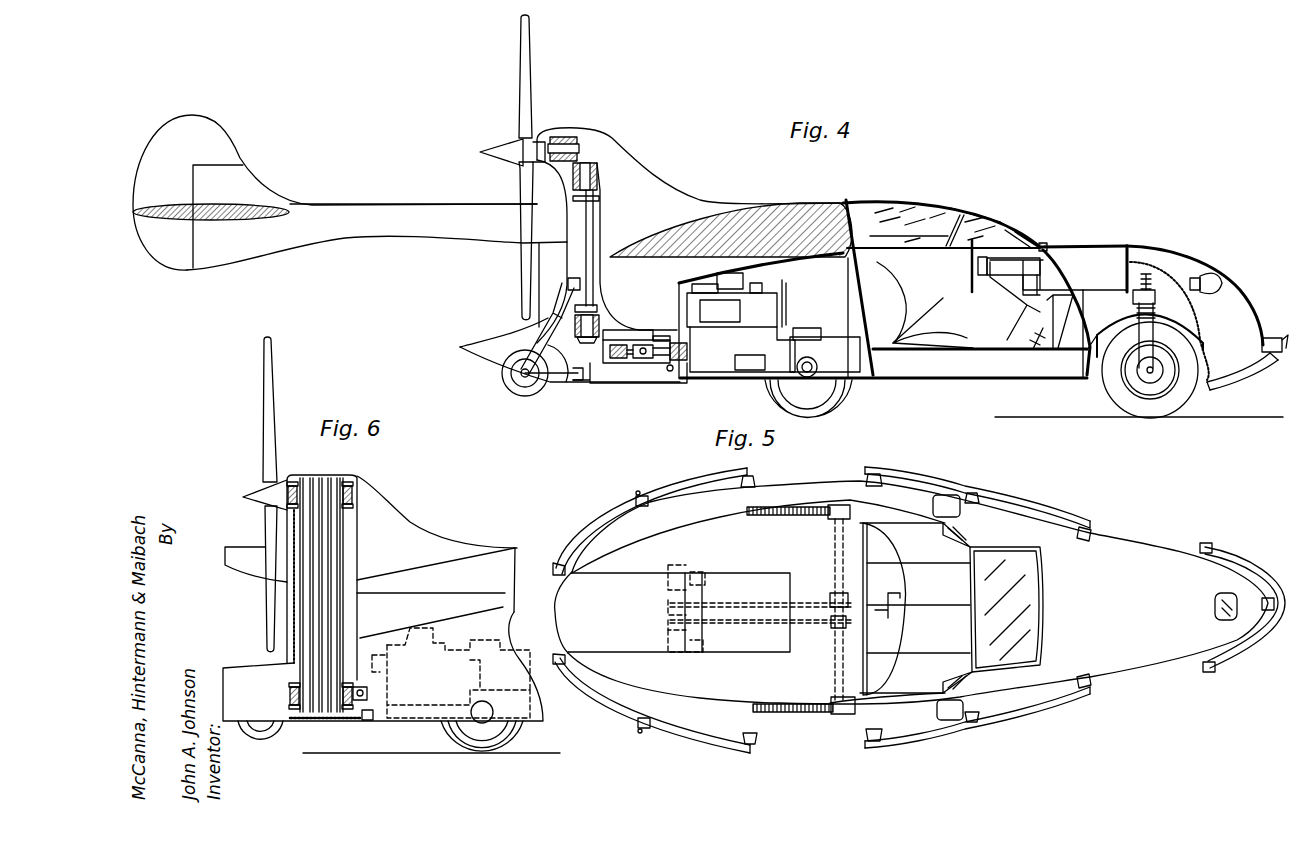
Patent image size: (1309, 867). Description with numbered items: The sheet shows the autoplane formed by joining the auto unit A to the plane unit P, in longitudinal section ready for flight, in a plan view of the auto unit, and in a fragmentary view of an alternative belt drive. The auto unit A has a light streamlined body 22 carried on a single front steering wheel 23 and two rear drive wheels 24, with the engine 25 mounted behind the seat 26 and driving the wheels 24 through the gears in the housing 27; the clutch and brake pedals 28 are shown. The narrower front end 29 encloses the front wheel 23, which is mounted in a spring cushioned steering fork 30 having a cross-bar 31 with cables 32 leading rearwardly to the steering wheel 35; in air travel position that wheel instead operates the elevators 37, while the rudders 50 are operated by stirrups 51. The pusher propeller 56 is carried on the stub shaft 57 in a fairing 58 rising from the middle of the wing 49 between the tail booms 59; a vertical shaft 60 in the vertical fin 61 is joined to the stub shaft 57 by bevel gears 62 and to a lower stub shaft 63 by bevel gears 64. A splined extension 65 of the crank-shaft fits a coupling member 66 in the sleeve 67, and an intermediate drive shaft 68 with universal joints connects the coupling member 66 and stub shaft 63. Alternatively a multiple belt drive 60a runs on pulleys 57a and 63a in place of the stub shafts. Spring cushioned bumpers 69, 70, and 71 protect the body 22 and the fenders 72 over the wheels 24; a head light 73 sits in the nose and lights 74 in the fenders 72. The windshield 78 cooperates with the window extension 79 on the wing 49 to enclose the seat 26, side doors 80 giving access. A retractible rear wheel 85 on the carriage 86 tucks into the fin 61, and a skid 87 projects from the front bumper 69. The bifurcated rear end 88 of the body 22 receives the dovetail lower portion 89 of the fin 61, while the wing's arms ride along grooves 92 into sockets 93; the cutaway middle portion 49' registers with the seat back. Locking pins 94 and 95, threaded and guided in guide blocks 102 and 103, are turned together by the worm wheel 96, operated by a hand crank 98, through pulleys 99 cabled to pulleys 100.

In FIG. 4, the body 22 is at (975, 380).
In FIG. 6, the body 22 is at (498, 627).
In FIG. 5, the body 22 is at (911, 592).
In FIG. 4, the front steering wheel 23 is at (1192, 394).
In FIG. 4, the rear drive wheels 24 is at (848, 398).
In FIG. 6, the rear drive wheels 24 is at (515, 738).
In FIG. 4, the engine 25 is at (741, 322).
In FIG. 6, the engine 25 is at (418, 708).
In FIG. 4, the seat 26 is at (935, 318).
In FIG. 5, the seat 26 is at (882, 695).
In FIG. 4, the housing 27 is at (860, 360).
In FIG. 4, the clutch and brake pedals 28 is at (1036, 350).
In FIG. 4, the front end 29 is at (1168, 258).
In FIG. 5, the front end 29 is at (1152, 548).
In FIG. 4, the steering fork 30 is at (1128, 330).
In FIG. 4, the cross-bar 31 is at (1156, 298).
In FIG. 4, the cables 32 is at (1090, 292).
In FIG. 4, the steering wheel 35 is at (970, 262).
In FIG. 4, the elevators 37 is at (158, 216).
In FIG. 4, the wing 49 is at (731, 216).
In FIG. 6, the wing 49 is at (436, 565).
In FIG. 4, the cutaway middle portion 49' is at (860, 192).
In FIG. 4, the rudders 50 is at (165, 130).
In FIG. 4, the stirrups 51 is at (1057, 333).
In FIG. 4, the propeller 56 is at (530, 70).
In FIG. 6, the propeller 56 is at (272, 405).
In FIG. 4, the stub shaft 57 is at (566, 140).
In FIG. 6, the pulley 57a is at (355, 492).
In FIG. 4, the fairing 58 is at (635, 155).
In FIG. 6, the fairing 58 is at (405, 515).
In FIG. 4, the tail booms 59 is at (444, 238).
In FIG. 6, the tail booms 59 is at (243, 565).
In FIG. 4, the vertical shaft 60 is at (594, 222).
In FIG. 6, the multiple belt drive 60a is at (325, 558).
In FIG. 4, the vertical fin 61 is at (562, 262).
In FIG. 6, the vertical fin 61 is at (294, 615).
In FIG. 4, the bevel gears 62 is at (595, 164).
In FIG. 4, the stub shaft 63 is at (619, 365).
In FIG. 6, the pulley 63a is at (316, 709).
In FIG. 4, the bevel gears 64 is at (598, 346).
In FIG. 4, the splined extension 65 is at (683, 362).
In FIG. 4, the coupling member 66 is at (661, 336).
In FIG. 6, the coupling member 66 is at (362, 686).
In FIG. 4, the sleeve 67 is at (618, 340).
In FIG. 4, the intermediate drive shaft 68 is at (647, 365).
In FIG. 4, the front bumper 69 is at (1277, 355).
In FIG. 5, the front bumper 69 is at (1250, 560).
In FIG. 5, the middle bumper 70 is at (1030, 503).
In FIG. 5, the rear bumper 71 is at (650, 485).
In FIG. 5, the fenders 72 is at (808, 487).
In FIG. 4, the head light 73 is at (1226, 280).
In FIG. 5, the head light 73 is at (1214, 607).
In FIG. 5, the lights 74 is at (933, 506).
In FIG. 4, the windshield 78 is at (1036, 244).
In FIG. 5, the windshield 78 is at (1030, 580).
In FIG. 4, the window extension 79 is at (923, 207).
In FIG. 4, the side doors 80 is at (1008, 301).
In FIG. 5, the side doors 80 is at (937, 530).
In FIG. 4, the rear wheel 85 is at (522, 396).
In FIG. 6, the rear wheel 85 is at (268, 732).
In FIG. 4, the carriage 86 is at (540, 340).
In FIG. 4, the skid 87 is at (1250, 372).
In FIG. 5, the bifurcated rear end 88 is at (632, 573).
In FIG. 4, the dovetail lower portion 89 is at (718, 312).
In FIG. 5, the grooves 92 is at (805, 507).
In FIG. 5, the sockets 93 is at (852, 510).
In FIG. 5, the locking pins 94 is at (833, 540).
In FIG. 5, the locking pins 95 is at (706, 580).
In FIG. 5, the worm wheel 96 is at (830, 625).
In FIG. 5, the hand crank 98 is at (916, 609).
In FIG. 5, the pulleys 99 is at (828, 596).
In FIG. 5, the pulleys 100 is at (668, 622).
In FIG. 5, the guide blocks 102 is at (852, 505).
In FIG. 5, the guide blocks 103 is at (685, 566).
In FIG. 4, the auto unit A is at (1097, 245).
In FIG. 5, the auto unit A is at (1126, 682).
In FIG. 4, the plane unit P is at (706, 194).